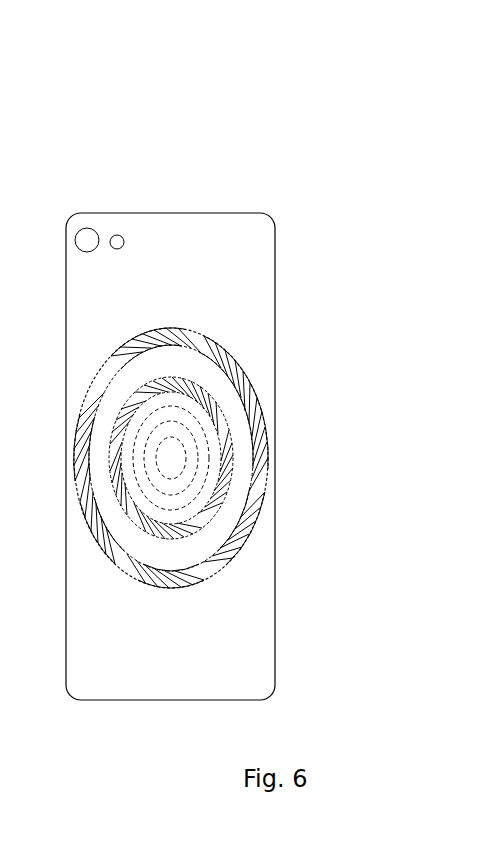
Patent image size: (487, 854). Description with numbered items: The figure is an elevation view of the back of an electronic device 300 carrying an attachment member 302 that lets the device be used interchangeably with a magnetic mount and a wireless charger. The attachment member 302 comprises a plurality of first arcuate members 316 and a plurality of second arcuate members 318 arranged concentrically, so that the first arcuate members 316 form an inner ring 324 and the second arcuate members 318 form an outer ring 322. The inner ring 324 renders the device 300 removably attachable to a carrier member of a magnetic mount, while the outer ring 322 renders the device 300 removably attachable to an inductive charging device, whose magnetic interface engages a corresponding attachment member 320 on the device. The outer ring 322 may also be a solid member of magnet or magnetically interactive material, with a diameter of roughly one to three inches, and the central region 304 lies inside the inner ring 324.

The electronic device 300 is at (248, 297).
The attachment member 302 is at (222, 428).
The central coil windings 304 is at (205, 463).
The first arcuate members 316 is at (173, 382).
The second arcuate members 318 is at (151, 348).
The attachment member 320 is at (225, 565).
The outer ring 322 is at (238, 533).
The inner ring 324 is at (218, 407).